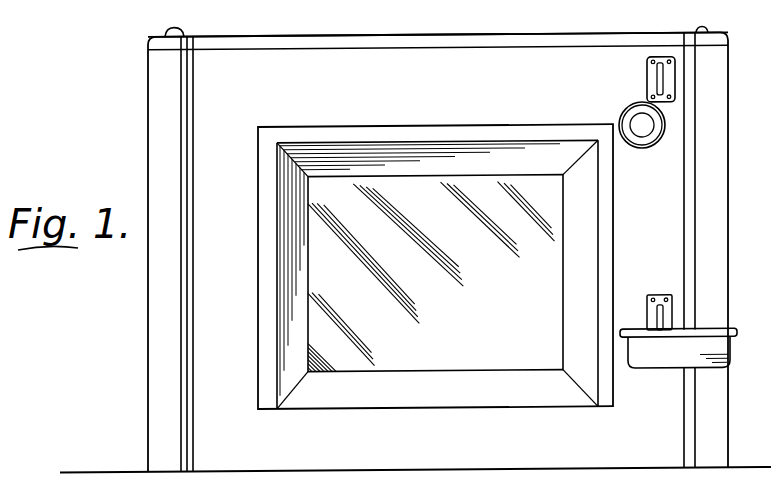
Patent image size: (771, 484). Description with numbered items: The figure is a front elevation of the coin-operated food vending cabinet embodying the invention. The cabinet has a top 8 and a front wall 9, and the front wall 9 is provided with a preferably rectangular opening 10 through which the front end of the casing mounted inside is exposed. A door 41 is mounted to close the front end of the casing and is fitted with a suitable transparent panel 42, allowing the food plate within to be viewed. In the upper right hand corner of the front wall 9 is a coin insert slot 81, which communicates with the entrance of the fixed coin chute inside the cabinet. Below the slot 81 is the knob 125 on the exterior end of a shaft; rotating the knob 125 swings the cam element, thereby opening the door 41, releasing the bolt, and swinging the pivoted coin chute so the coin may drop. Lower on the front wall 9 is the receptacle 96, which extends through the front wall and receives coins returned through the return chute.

The top 8 is at (382, 43).
The front wall 9 is at (438, 247).
The opening 10 is at (507, 128).
The door 41 is at (592, 288).
The transparent panel 42 is at (435, 273).
The coin insert slot 81 is at (658, 83).
The knob 125 is at (628, 118).
The receptacle 96 is at (663, 362).